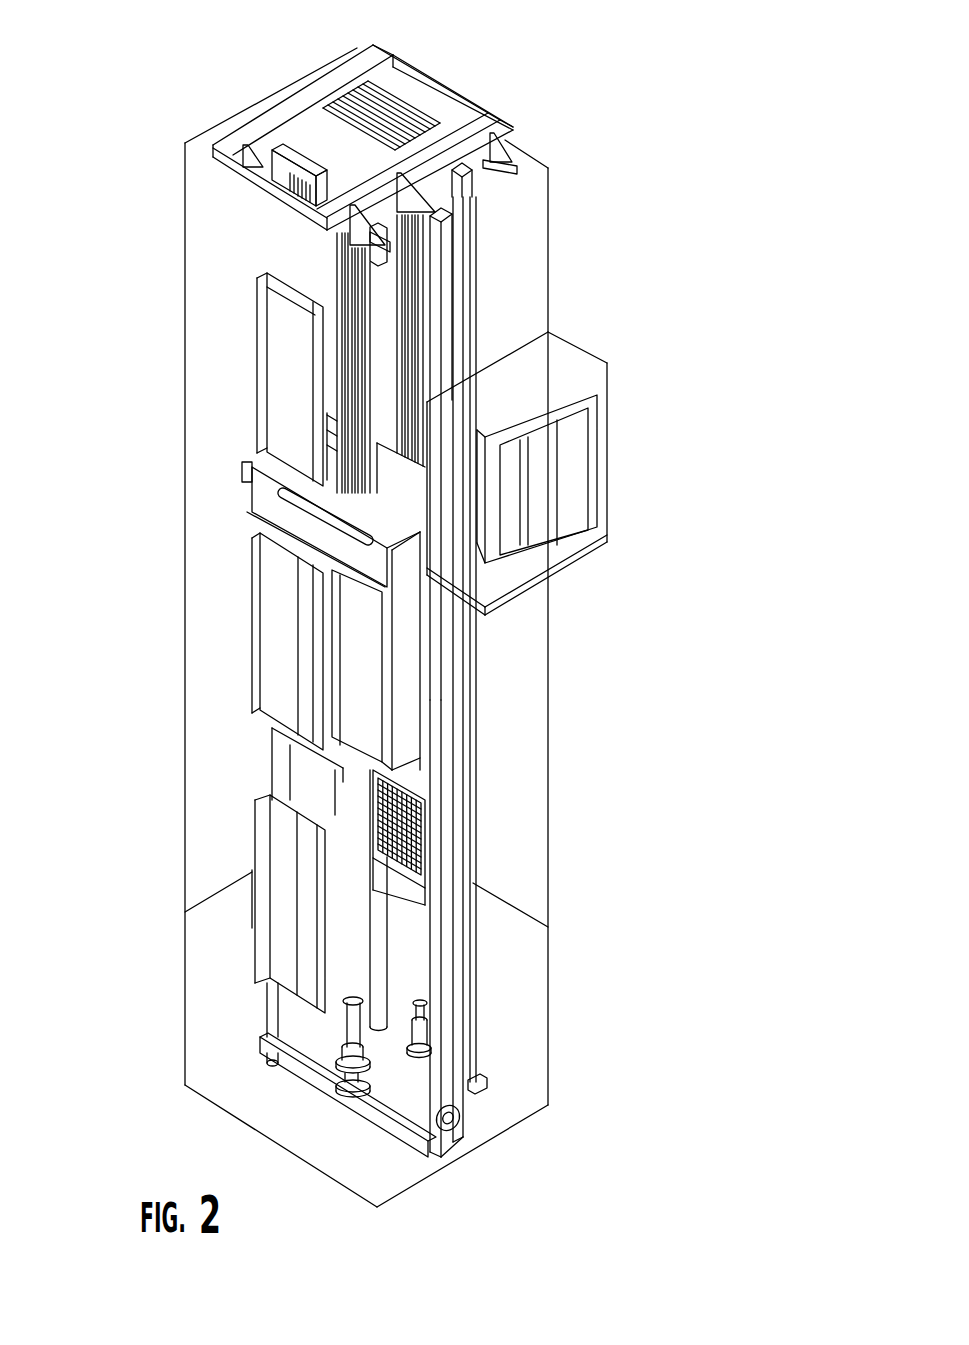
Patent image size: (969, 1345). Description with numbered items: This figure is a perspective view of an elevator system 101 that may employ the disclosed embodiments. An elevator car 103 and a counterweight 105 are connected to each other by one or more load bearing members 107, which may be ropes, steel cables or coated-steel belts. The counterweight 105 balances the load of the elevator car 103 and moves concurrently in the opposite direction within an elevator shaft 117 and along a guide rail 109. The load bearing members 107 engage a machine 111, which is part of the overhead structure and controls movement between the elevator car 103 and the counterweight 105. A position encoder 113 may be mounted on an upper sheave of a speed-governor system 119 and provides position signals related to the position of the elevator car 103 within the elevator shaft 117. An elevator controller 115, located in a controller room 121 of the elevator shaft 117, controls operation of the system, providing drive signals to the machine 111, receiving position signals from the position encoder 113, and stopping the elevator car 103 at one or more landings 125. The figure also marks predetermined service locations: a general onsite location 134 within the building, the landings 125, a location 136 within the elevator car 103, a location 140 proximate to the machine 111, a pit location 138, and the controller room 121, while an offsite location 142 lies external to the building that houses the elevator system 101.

The elevator system 101 is at (567, 70).
The elevator car 103 is at (365, 667).
The counterweight 105 is at (420, 843).
The load bearing members 107 is at (372, 372).
The guide rail 109 is at (448, 774).
The machine 111 is at (281, 140).
The position encoder 113 is at (447, 222).
The elevator controller 115 is at (556, 482).
The elevator shaft 117 is at (238, 775).
The speed-governor system 119 is at (460, 258).
The controller room 121 is at (612, 360).
The landings 125 is at (255, 367).
The onsite location 134 is at (605, 950).
The location within elevator car 136 is at (400, 627).
The pit location 138 is at (397, 1078).
The location proximate to machine 140 is at (432, 68).
The offsite location 142 is at (40, 745).